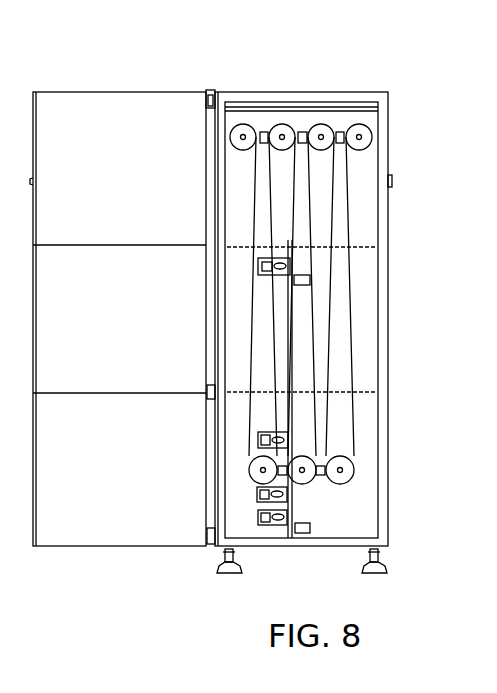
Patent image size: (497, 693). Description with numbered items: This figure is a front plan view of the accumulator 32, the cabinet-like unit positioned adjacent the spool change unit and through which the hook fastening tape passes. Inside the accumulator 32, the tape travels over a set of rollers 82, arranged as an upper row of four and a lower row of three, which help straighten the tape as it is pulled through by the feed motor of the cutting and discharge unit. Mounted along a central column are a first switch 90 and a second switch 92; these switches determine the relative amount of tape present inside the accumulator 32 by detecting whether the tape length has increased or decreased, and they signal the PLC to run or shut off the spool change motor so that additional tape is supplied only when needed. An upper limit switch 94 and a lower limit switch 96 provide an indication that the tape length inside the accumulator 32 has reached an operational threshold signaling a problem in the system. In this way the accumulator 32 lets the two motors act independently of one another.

The accumulator 32 is at (413, 125).
The rollers 82 is at (356, 132).
The first switch 90 is at (280, 498).
The second switch 92 is at (282, 432).
The upper limit switch 94 is at (283, 262).
The lower limit switch 96 is at (283, 526).